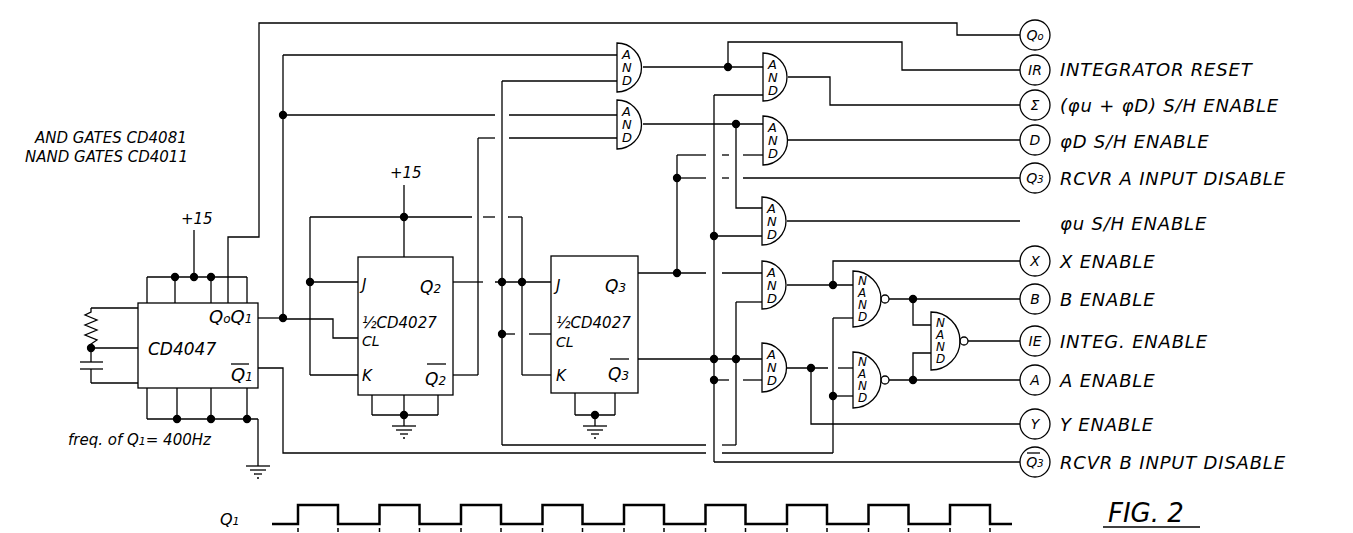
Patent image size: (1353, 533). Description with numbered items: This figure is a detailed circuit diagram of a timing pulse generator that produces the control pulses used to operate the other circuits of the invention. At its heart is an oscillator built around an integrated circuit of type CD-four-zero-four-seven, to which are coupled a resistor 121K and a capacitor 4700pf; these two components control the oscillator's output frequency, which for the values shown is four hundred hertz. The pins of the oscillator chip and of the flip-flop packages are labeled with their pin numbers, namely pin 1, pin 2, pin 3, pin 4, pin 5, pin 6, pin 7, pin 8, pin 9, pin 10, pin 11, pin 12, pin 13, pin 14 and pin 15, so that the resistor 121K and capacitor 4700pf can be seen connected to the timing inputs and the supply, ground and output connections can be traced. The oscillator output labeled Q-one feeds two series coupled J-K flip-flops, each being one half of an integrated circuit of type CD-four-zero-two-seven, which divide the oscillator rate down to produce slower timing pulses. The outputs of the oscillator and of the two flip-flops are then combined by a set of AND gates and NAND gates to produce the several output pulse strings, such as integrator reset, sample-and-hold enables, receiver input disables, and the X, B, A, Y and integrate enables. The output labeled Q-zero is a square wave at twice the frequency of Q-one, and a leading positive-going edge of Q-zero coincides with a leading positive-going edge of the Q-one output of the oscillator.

The IC pin 1 is at (426, 320).
The IC pin 2 is at (426, 325).
The IC pin 3 is at (321, 333).
The IC pin 4 is at (361, 347).
The IC pin 5 is at (363, 326).
The IC pin 6 is at (381, 284).
The IC pin 7 is at (381, 403).
The IC pin 8 is at (292, 403).
The IC pin 9 is at (327, 403).
The IC pin 10 is at (437, 188).
The IC pin 11 is at (555, 385).
The IC pin 12 is at (312, 403).
The IC pin 13 is at (624, 180).
The IC pin 14 is at (432, 256).
The IC pin 15 is at (468, 276).
The resistor 121K is at (71, 328).
The capacitor 4700pf is at (59, 365).